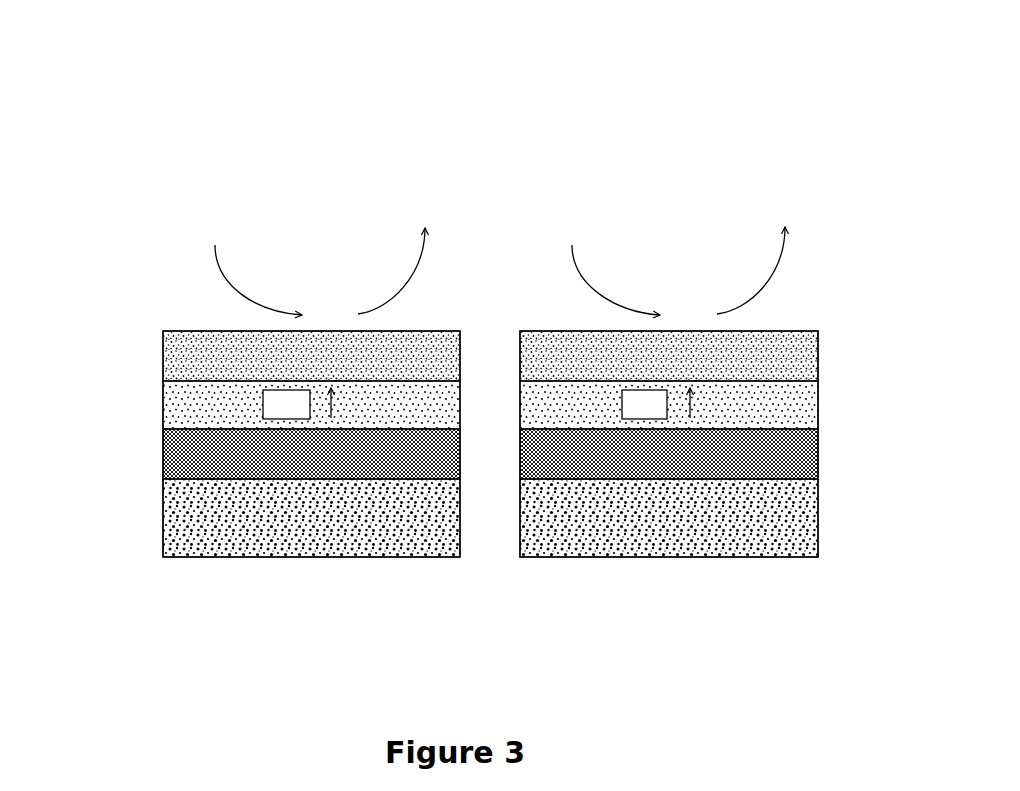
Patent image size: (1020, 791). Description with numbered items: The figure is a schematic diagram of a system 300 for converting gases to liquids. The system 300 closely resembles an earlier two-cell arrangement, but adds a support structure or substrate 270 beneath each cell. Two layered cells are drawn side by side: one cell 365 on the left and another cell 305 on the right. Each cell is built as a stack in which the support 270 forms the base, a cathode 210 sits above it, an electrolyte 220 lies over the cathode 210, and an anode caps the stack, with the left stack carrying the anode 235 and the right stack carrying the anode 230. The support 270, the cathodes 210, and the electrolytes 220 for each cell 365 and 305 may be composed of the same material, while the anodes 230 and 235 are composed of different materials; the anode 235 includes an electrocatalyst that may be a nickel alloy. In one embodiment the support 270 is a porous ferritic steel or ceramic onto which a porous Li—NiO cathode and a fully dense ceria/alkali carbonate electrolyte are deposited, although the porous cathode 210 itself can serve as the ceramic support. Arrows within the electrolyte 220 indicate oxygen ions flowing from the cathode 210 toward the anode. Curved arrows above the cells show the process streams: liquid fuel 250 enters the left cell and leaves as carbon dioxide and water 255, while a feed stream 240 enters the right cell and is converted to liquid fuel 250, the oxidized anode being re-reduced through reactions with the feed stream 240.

The system for converting gases to liquids 300 is at (485, 84).
The first electrochemical cell 365 is at (460, 575).
The cell 305 is at (818, 575).
The anode 235 is at (200, 347).
The anode 230 is at (777, 358).
The electrolyte 220 is at (200, 397).
The cathode 210 is at (200, 445).
The support 270 is at (200, 508).
The liquid fuel 250 is at (459, 254).
The CO2 and H2O product stream 255 is at (359, 258).
The feed stream 240 is at (613, 266).